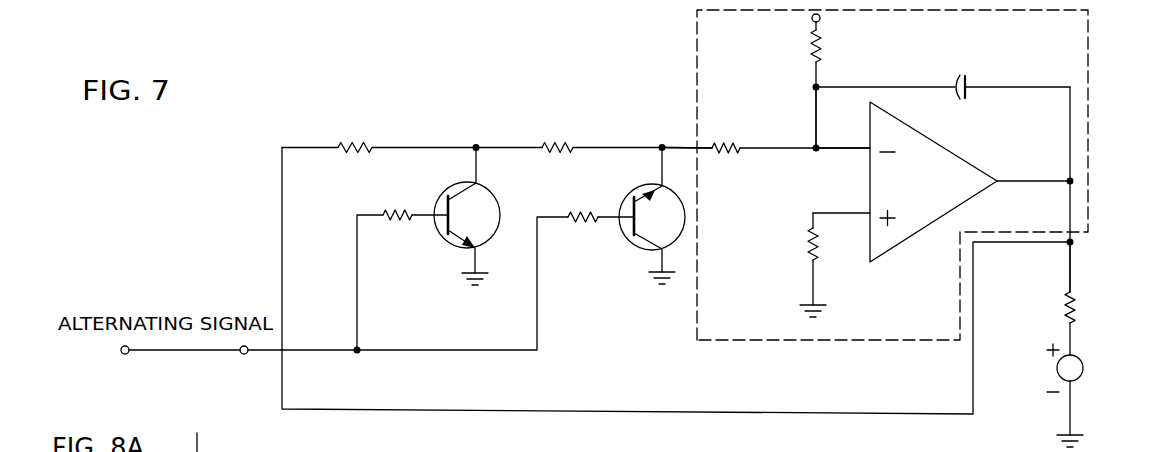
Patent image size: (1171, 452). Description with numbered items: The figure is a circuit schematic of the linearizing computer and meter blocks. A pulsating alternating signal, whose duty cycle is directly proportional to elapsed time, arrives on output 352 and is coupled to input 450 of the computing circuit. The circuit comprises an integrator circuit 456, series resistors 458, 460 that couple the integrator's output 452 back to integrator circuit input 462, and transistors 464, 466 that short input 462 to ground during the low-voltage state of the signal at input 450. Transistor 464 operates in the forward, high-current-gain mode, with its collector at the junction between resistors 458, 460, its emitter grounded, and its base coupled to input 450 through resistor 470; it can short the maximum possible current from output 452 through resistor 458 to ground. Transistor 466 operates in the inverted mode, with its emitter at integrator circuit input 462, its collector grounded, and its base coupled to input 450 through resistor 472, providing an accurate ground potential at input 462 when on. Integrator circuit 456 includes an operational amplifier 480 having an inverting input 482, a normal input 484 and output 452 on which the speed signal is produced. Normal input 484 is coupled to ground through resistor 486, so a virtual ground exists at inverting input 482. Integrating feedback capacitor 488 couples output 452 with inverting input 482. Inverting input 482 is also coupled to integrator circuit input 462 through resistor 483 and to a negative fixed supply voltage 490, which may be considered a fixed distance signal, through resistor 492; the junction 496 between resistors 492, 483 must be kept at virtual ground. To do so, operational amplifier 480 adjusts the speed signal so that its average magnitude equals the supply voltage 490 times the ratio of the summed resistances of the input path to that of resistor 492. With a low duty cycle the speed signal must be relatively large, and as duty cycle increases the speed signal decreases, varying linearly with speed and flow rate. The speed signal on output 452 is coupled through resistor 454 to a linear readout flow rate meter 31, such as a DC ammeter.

The series resistor 458 is at (348, 146).
The series resistor 460 is at (552, 145).
The integrator circuit input 462 is at (688, 147).
The transistor 464 is at (448, 186).
The transistor 466 is at (634, 190).
The resistor 470 is at (396, 220).
The resistor 472 is at (583, 222).
The integrator circuit 456 is at (1091, 70).
The resistor 483 is at (726, 146).
The junction 496 is at (812, 152).
The inverting input 482 is at (847, 148).
The normal input 484 is at (850, 212).
The resistor 486 is at (810, 252).
The fixed supply voltage 490 is at (820, 19).
The resistor 492 is at (821, 54).
The integrating feedback capacitor 488 is at (964, 76).
The operational amplifier 480 is at (930, 140).
The output 452 is at (1071, 263).
The resistor 454 is at (1075, 311).
The linear readout flow rate meter 31 is at (1082, 362).
The output 352 is at (121, 350).
The input 450 is at (244, 354).